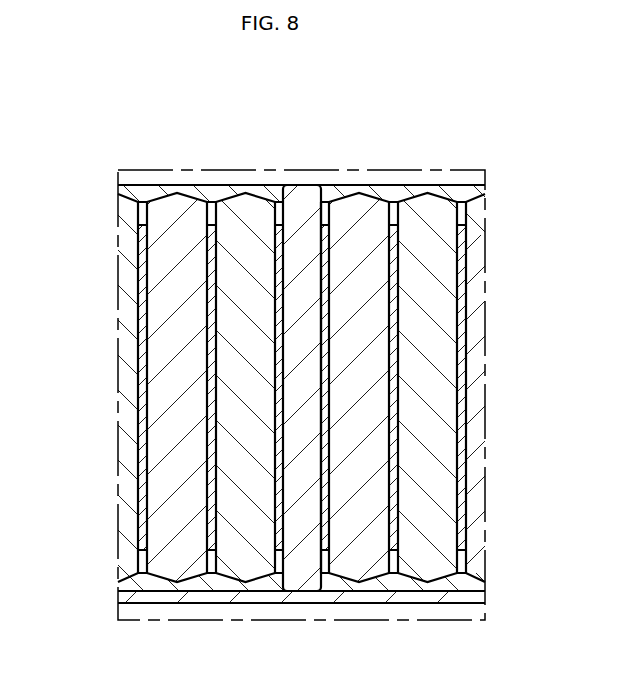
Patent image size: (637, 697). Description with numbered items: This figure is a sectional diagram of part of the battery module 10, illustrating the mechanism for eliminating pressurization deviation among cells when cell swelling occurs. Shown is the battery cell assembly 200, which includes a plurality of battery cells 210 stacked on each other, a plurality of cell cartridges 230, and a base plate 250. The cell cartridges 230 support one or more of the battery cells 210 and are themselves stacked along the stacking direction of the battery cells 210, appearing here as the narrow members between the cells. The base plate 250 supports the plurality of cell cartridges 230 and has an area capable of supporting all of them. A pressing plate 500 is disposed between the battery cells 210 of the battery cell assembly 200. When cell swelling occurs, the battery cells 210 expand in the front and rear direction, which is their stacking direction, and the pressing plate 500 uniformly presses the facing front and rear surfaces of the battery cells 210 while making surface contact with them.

The battery module 10 is at (174, 138).
The battery cell assembly 200 is at (97, 294).
The battery cell 210 is at (353, 550).
The cell cartridge 230 is at (392, 582).
The base plate 250 is at (457, 597).
The pressing plate 500 is at (303, 572).